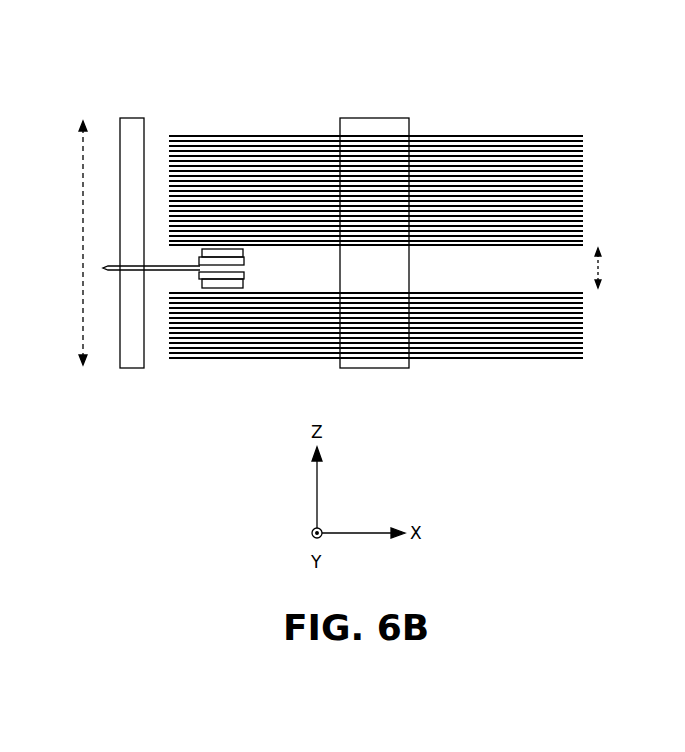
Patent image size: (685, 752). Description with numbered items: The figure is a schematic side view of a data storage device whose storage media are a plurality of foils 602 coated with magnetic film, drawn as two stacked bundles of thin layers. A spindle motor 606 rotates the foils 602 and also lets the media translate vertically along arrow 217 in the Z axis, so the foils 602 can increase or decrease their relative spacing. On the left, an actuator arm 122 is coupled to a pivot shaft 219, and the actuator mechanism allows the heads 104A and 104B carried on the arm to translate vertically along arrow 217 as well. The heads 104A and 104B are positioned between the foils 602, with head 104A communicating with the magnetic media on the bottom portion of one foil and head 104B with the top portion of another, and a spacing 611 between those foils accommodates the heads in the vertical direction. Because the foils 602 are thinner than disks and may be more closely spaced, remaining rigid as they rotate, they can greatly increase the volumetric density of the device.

The foils 602 is at (572, 93).
The spindle motor 606 is at (375, 118).
The pivot shaft 219 is at (132, 118).
The arrow 217 is at (83, 143).
The actuator arm 122 is at (105, 268).
The head 104A is at (240, 253).
The head 104B is at (233, 284).
The spacing 611 is at (600, 262).